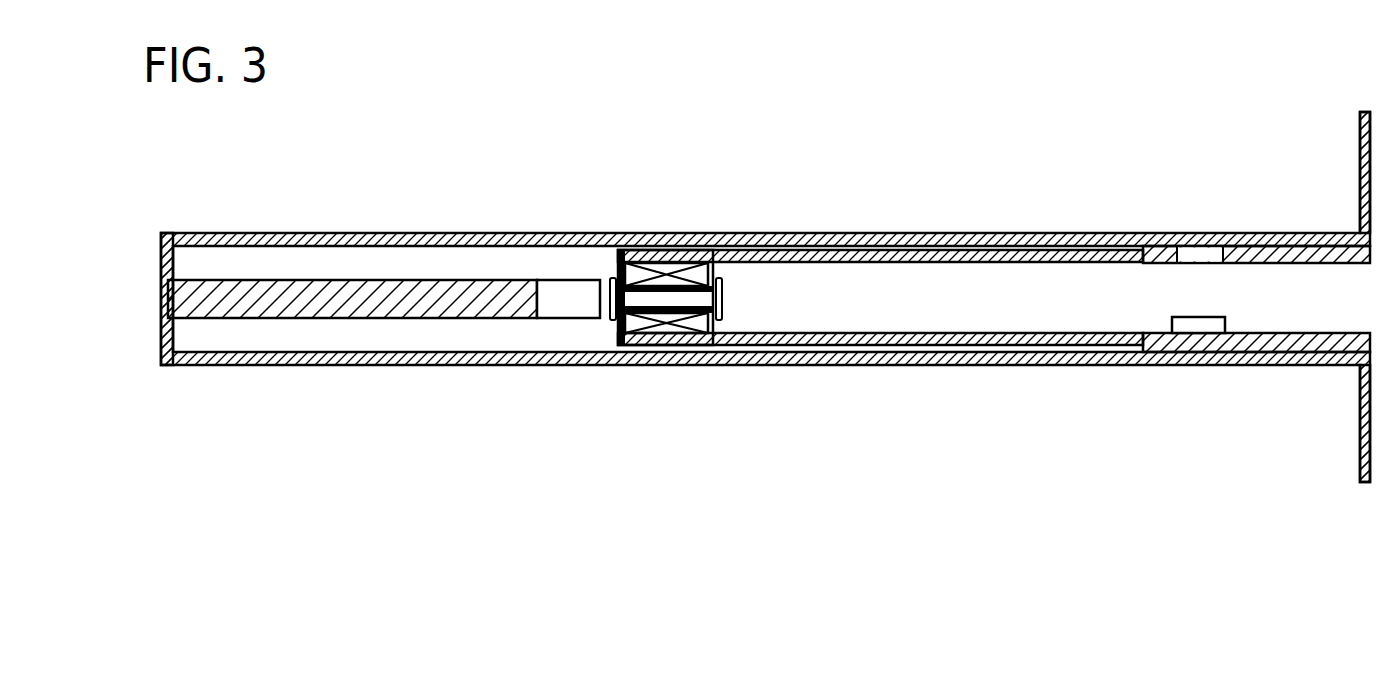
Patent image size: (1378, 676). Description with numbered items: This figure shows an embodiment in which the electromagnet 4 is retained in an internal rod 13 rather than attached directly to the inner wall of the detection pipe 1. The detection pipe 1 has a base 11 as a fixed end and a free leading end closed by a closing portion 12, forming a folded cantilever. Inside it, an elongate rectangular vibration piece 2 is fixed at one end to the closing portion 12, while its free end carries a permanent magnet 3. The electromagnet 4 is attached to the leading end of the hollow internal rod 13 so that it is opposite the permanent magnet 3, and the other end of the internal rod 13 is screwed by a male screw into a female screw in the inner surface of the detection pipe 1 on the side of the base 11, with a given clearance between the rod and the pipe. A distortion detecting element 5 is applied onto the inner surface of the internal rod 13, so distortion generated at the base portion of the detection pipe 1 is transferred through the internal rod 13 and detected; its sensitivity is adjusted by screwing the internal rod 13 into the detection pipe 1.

The detection pipe 1 is at (832, 235).
The vibration piece 2 is at (420, 281).
The permanent magnet 3 is at (587, 292).
The electromagnet 4 is at (687, 258).
The distortion detecting element 5 is at (1198, 327).
The base 11 is at (1358, 167).
The closing portion 12 is at (160, 292).
The internal rod 13 is at (1010, 256).